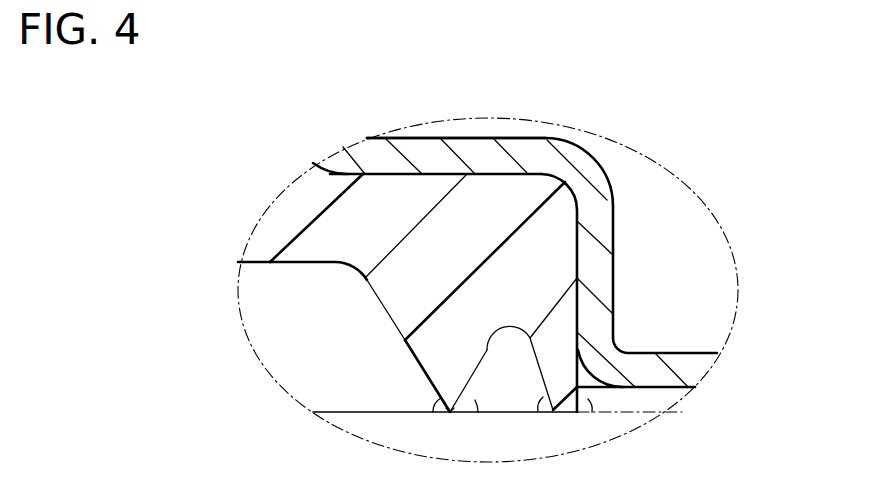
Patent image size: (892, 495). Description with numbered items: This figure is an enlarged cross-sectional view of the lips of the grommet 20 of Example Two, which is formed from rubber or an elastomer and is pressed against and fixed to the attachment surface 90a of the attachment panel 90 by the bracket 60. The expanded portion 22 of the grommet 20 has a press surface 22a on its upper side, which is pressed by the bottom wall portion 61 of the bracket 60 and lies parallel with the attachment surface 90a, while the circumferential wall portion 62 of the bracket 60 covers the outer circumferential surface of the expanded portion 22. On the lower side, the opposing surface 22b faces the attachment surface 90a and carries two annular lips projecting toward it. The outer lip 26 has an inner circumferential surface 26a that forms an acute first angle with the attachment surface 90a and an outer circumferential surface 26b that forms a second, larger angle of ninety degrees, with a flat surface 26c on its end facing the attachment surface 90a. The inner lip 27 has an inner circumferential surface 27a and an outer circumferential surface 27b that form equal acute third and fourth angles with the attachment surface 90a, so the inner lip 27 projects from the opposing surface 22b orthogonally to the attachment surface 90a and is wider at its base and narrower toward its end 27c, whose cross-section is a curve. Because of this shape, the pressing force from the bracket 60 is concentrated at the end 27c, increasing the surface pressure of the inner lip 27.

The grommet 20 is at (591, 203).
The expanded portion 22 is at (533, 195).
The press surface 22a is at (488, 174).
The opposing surface 22b is at (258, 263).
The outer lip 26 is at (580, 392).
The inner circumferential surface 26a is at (533, 338).
The outer circumferential surface 26b is at (590, 362).
The flat surface 26c is at (565, 412).
The inner lip 27 is at (443, 382).
The inner circumferential surface 27a is at (408, 348).
The outer circumferential surface 27b is at (490, 366).
The end 27c is at (452, 413).
The bracket 60 is at (616, 170).
The bottom wall portion 61 is at (412, 138).
The circumferential wall portion 62 is at (613, 262).
The attachment panel 90 is at (535, 448).
The attachment surface 90a is at (657, 407).